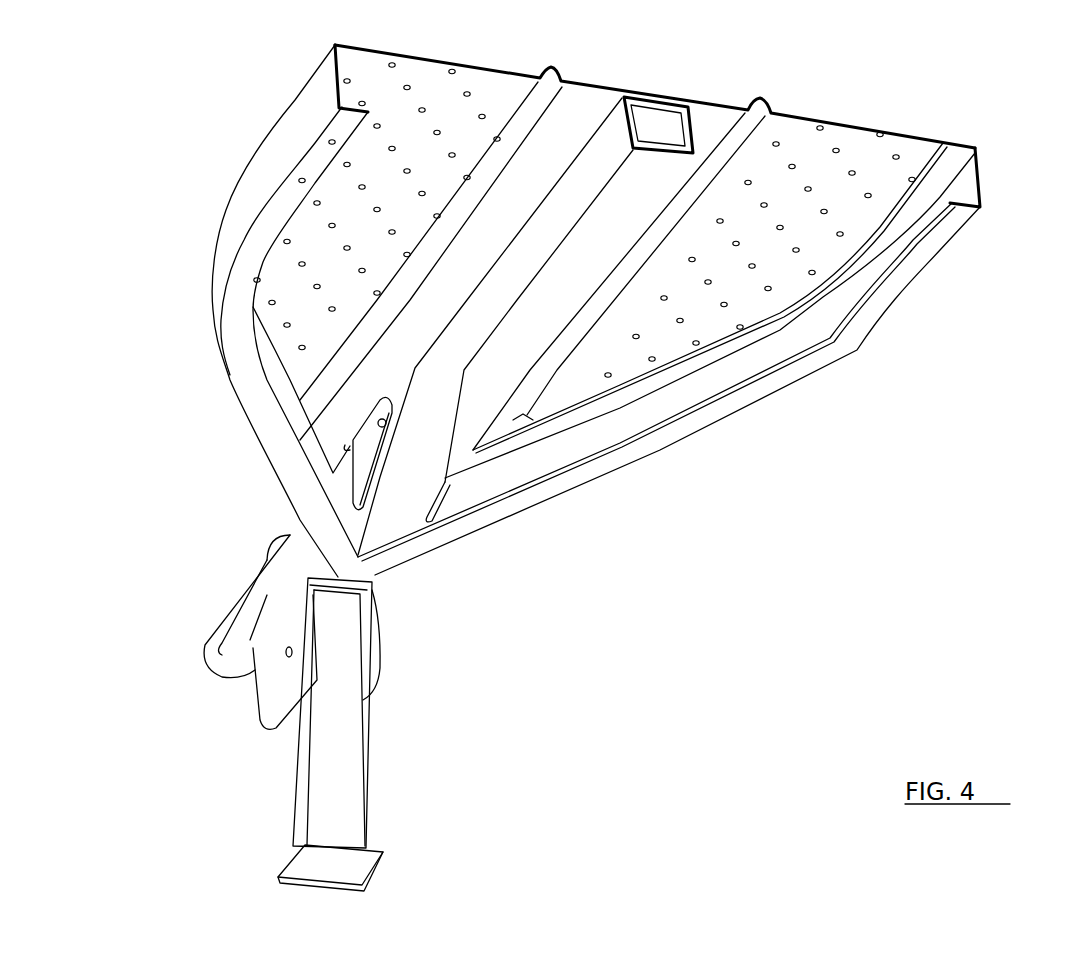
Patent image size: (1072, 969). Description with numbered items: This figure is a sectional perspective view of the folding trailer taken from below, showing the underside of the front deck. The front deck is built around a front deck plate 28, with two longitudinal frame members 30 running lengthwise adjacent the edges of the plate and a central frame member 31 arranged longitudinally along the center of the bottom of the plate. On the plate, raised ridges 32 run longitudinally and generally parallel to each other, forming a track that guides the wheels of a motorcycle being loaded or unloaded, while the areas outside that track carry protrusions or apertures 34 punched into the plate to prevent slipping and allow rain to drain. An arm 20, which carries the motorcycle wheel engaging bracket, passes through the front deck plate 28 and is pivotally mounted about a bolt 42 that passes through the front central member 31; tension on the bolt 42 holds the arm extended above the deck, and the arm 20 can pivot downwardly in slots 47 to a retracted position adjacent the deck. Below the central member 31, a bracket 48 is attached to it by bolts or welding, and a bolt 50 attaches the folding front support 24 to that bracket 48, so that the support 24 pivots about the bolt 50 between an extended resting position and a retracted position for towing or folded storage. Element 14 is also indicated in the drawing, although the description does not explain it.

The brace 14 is at (229, 619).
The arm 20 is at (363, 433).
The folding front support 24 is at (338, 802).
The front deck plate 28 is at (485, 90).
The longitudinal frame members 30 is at (258, 178).
The central frame member 31 is at (636, 124).
The raised ridges 32 is at (558, 66).
The protrusions or apertures 34 is at (837, 152).
The bolt 42 is at (387, 424).
The slots 47 is at (345, 447).
The bracket 48 is at (272, 705).
The bolt 50 is at (284, 654).